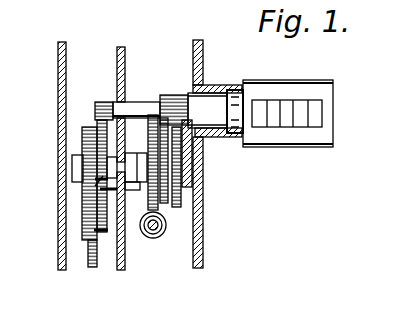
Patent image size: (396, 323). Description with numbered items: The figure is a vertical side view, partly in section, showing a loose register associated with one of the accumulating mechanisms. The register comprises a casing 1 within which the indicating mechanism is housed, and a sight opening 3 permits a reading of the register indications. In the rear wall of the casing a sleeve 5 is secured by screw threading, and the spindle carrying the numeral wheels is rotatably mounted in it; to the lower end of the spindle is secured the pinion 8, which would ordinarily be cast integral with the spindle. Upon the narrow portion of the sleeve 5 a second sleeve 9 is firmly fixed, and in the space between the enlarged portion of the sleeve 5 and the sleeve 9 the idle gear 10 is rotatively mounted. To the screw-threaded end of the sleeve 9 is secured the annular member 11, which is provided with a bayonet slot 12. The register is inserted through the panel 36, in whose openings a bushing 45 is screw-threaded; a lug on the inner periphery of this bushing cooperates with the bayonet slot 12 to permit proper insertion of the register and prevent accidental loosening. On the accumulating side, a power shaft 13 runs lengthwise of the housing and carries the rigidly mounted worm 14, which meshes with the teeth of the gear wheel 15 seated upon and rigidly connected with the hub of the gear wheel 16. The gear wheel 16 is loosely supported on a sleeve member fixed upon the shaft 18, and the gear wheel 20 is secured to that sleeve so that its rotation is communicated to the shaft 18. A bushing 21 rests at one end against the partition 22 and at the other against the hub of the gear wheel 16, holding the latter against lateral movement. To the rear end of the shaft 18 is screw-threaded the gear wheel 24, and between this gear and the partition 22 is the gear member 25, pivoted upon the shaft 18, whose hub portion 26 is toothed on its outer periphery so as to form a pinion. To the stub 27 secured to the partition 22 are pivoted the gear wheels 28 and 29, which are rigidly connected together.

The casing 1 is at (333, 136).
The sight opening 3 is at (294, 127).
The sleeve 5 is at (134, 102).
The pinion 8 is at (100, 102).
The second sleeve 9 is at (201, 96).
The idle gear 10 is at (170, 96).
The annular member 11 is at (236, 90).
The bayonet slot 12 is at (236, 134).
The power shaft 13 is at (152, 238).
The worm 14 is at (165, 231).
The gear wheel 15 is at (150, 141).
The gear wheel 16 is at (166, 218).
The shaft 18 is at (193, 173).
The gear wheel 20 is at (181, 201).
The bushing 21 is at (127, 183).
The partition 22 is at (122, 258).
The gear wheel 24 is at (83, 142).
The gear member 25 is at (82, 193).
The hub portion 26 is at (78, 172).
The stub 27 is at (105, 237).
The gear wheel 28 is at (84, 243).
The gear wheel 29 is at (92, 268).
The panel 36 is at (199, 266).
The bushing 45 is at (205, 87).